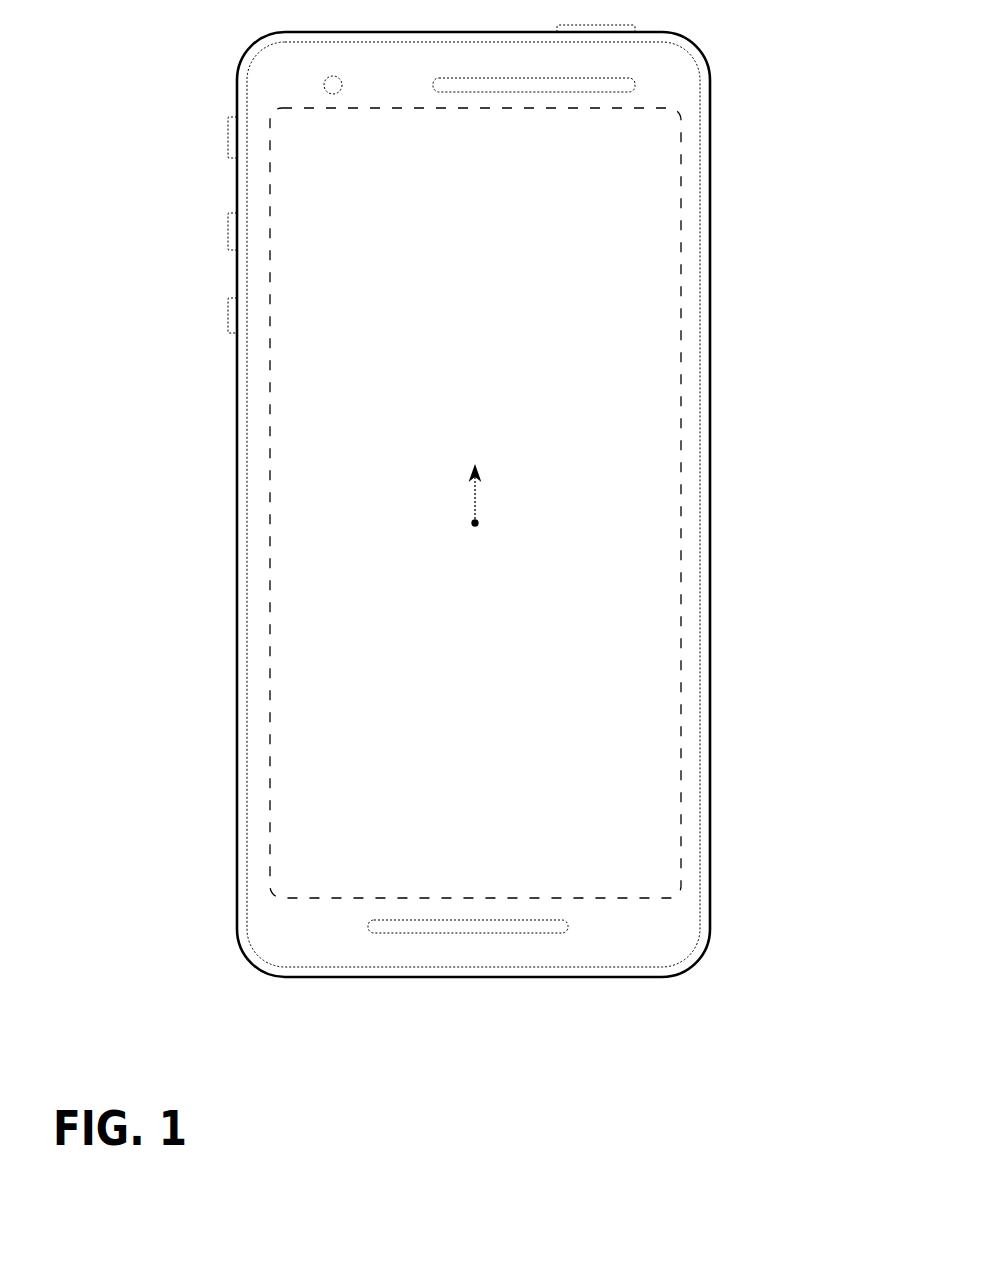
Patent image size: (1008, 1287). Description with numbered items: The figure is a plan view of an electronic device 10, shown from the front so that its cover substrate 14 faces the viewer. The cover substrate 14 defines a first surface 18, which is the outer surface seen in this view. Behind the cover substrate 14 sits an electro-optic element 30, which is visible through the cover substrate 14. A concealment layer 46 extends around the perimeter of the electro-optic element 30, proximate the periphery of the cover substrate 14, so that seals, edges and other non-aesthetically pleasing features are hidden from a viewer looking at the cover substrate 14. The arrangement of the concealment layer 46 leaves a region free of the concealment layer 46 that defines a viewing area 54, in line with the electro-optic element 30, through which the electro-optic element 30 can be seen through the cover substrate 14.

The electronic device 10 is at (735, 89).
The cover substrate 14 is at (683, 475).
The first surface 18 is at (690, 580).
The electro-optic element 30 is at (484, 503).
The concealment layer 46 is at (468, 100).
The viewing area 54 is at (385, 665).